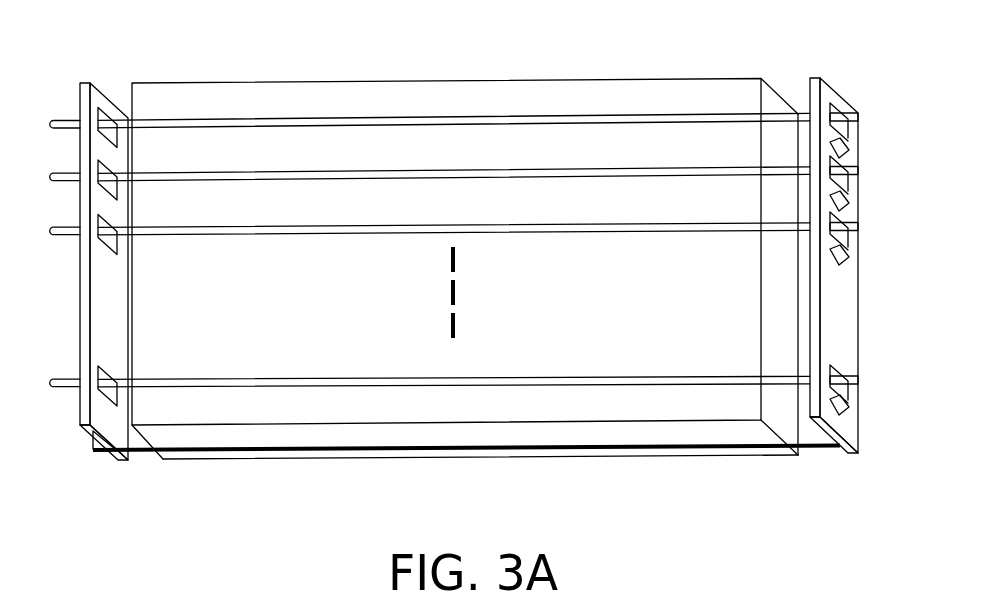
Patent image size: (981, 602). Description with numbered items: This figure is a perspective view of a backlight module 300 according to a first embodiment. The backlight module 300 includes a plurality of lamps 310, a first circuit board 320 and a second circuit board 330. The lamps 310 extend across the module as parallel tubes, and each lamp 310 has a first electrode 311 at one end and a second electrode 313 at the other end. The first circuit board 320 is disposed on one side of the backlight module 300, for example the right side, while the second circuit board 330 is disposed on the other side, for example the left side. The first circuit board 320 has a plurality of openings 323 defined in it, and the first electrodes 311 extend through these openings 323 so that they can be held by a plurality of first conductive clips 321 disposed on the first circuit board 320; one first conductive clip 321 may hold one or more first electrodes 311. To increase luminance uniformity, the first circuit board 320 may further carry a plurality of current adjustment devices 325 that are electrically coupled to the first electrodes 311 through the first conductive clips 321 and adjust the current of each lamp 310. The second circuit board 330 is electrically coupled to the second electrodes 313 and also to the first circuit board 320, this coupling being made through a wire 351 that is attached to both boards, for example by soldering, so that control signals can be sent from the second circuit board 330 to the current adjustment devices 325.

The backlight module 300 is at (800, 478).
The lamp 310 is at (616, 122).
The first electrode 311 is at (852, 110).
The second electrode 313 is at (63, 122).
The first circuit board 320 is at (827, 80).
The first conductive clip 321 is at (848, 235).
The opening 323 is at (850, 182).
The current adjustment device 325 is at (832, 268).
The second circuit board 330 is at (98, 85).
The wire 351 is at (490, 451).